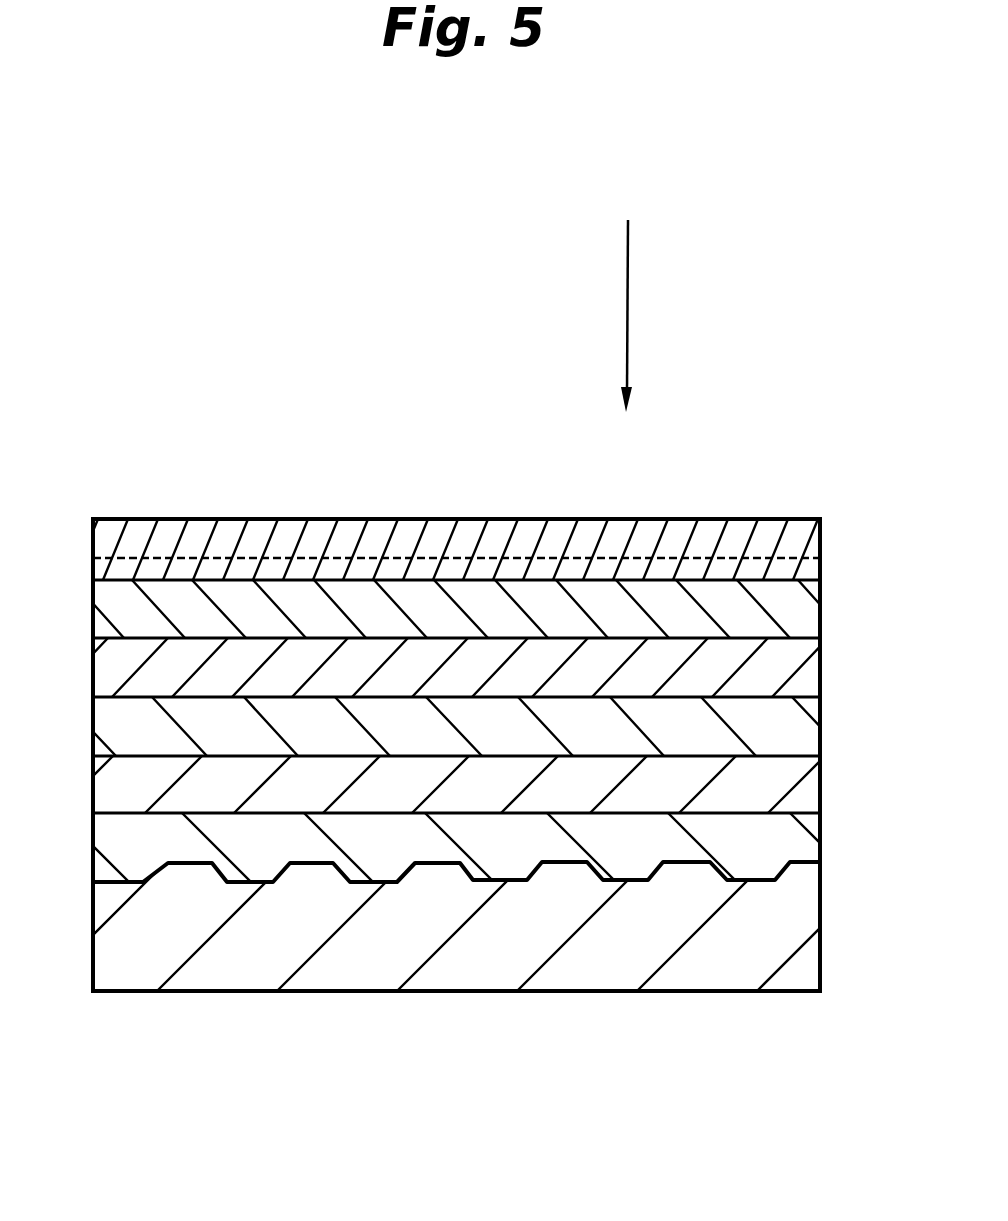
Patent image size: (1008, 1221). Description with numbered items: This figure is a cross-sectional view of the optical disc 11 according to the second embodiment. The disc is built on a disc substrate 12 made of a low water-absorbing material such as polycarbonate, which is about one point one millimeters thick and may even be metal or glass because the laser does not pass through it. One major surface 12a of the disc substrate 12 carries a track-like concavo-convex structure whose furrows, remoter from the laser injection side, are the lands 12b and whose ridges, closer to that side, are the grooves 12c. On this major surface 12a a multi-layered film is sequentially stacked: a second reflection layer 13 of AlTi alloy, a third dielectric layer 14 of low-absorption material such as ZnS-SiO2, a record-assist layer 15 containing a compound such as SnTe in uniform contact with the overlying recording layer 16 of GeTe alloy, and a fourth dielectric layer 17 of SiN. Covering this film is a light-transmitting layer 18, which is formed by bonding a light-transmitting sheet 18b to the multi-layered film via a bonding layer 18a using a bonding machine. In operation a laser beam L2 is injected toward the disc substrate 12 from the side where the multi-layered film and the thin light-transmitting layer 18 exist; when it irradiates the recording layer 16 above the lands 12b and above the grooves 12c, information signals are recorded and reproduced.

The optical disc 11 is at (393, 213).
The disc substrate 12 is at (697, 940).
The major surface 12a is at (143, 882).
The land 12b is at (762, 878).
The groove 12c is at (693, 857).
The second reflection layer 13 is at (236, 837).
The third dielectric layer 14 is at (751, 777).
The record-assist layer 15 is at (532, 728).
The recording layer 16 is at (388, 675).
The fourth dielectric layer 17 is at (270, 617).
The light-transmitting layer 18 is at (308, 302).
The bonding layer 18a is at (130, 572).
The light-transmitting sheet 18b is at (187, 535).
The laser beam L2 is at (632, 300).